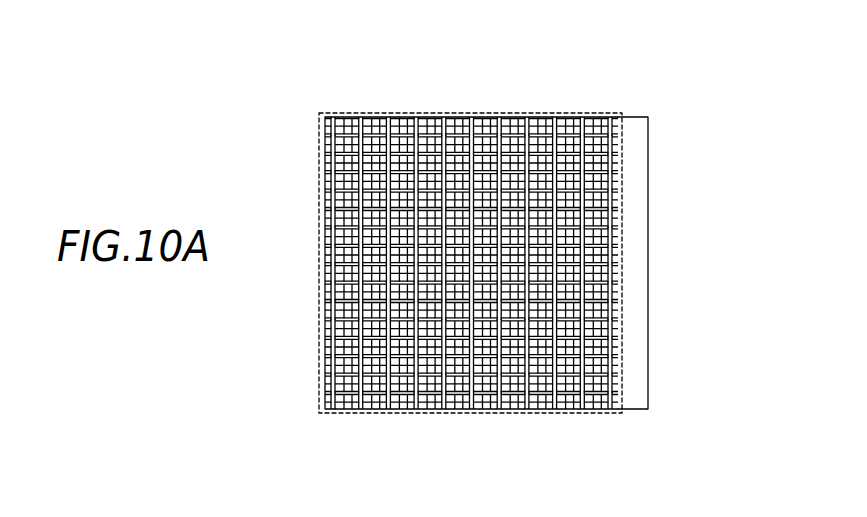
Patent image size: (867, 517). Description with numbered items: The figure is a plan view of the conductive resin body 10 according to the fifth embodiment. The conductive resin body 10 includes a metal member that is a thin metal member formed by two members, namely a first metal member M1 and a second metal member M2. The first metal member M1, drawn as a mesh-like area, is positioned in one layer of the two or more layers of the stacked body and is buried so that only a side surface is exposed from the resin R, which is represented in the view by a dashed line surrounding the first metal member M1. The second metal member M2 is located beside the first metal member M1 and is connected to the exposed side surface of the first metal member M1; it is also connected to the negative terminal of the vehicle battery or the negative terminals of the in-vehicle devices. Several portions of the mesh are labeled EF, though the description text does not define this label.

The conductive resin body 10 is at (638, 70).
The first metal member M1 is at (339, 124).
The second metal member M2 is at (640, 224).
The resin R is at (521, 112).
The electrode fingers / mesh lines EF is at (350, 153).